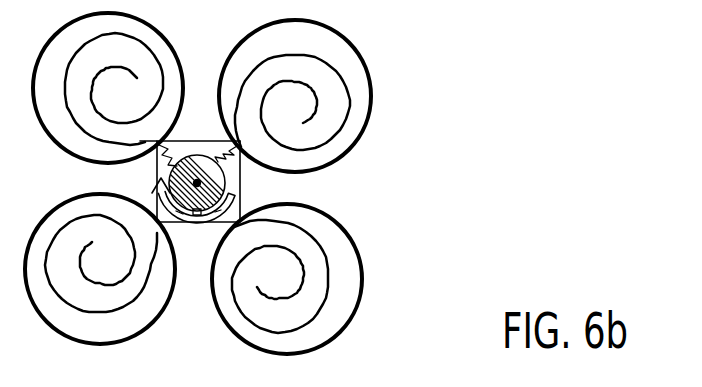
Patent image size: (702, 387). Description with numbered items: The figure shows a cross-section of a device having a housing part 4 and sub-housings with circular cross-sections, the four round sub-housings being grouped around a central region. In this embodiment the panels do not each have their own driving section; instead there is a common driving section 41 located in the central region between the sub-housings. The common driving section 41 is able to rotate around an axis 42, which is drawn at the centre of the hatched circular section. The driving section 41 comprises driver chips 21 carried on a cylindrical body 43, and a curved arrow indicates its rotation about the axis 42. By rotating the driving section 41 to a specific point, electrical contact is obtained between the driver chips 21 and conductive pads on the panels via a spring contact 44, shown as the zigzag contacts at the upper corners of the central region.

The housing part 4 is at (241, 197).
The driver chips 21 is at (193, 220).
The common driving section 41 is at (197, 146).
The axis 42 is at (240, 183).
The cylindrical body 43 is at (160, 177).
The spring contact 44 is at (221, 138).